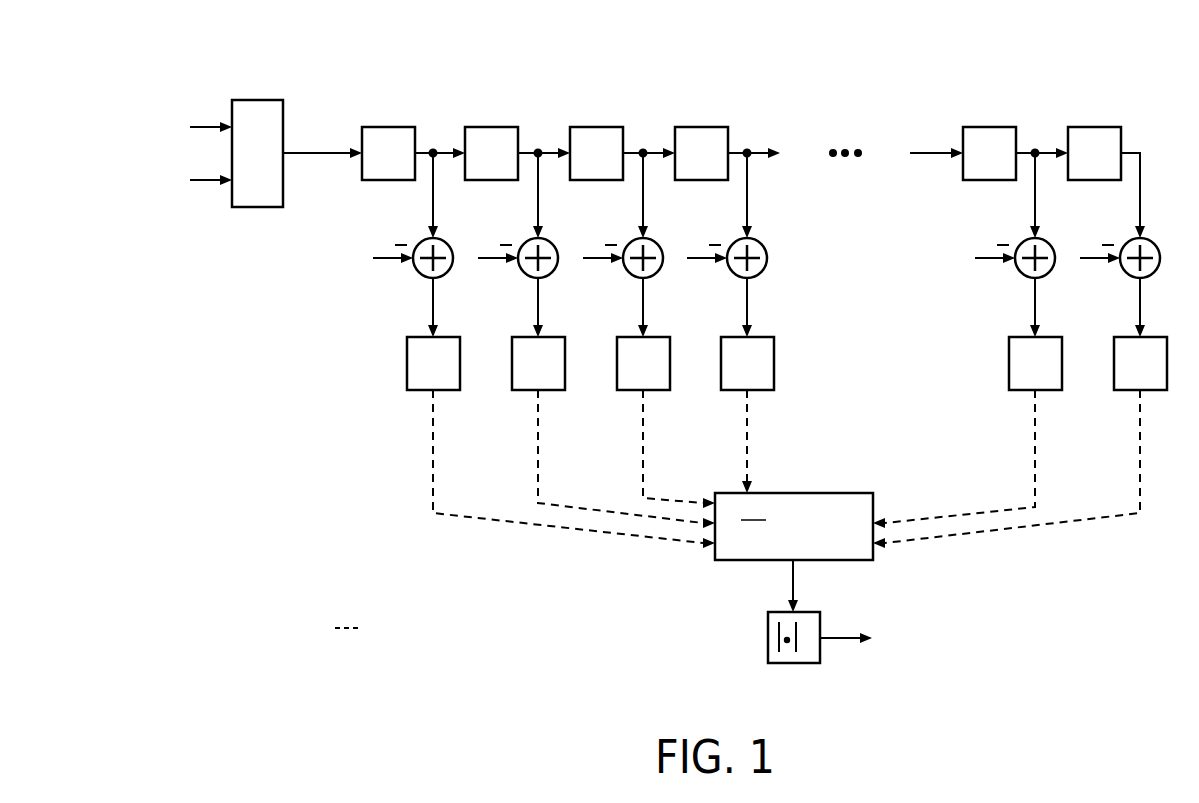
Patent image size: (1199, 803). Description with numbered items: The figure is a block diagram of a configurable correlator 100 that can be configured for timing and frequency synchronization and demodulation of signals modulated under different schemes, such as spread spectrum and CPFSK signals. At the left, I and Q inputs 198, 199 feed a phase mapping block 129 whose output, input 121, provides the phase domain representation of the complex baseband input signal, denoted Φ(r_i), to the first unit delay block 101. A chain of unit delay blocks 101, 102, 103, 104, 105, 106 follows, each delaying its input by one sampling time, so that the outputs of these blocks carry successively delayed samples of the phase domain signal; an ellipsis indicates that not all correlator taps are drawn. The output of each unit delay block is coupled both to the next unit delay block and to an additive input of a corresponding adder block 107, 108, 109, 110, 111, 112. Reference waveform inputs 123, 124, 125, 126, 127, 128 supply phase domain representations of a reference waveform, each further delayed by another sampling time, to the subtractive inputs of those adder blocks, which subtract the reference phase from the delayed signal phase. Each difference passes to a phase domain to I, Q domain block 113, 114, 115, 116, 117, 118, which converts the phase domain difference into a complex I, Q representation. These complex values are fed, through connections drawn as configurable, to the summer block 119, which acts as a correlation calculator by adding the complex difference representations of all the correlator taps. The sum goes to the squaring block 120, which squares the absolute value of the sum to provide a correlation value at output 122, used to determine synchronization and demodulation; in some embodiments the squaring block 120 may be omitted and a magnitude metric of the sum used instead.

The configurable correlator 100 is at (294, 42).
The unit delay block 101 is at (369, 127).
The unit delay block 102 is at (472, 127).
The unit delay block 103 is at (577, 127).
The unit delay block 104 is at (682, 127).
The unit delay block 105 is at (970, 127).
The unit delay block 106 is at (1075, 127).
The adder block 107 is at (446, 243).
The adder block 108 is at (551, 243).
The adder block 109 is at (656, 243).
The adder block 110 is at (760, 243).
The adder block 111 is at (1048, 243).
The adder block 112 is at (1153, 243).
The phase domain to I, Q domain block 113 is at (450, 337).
The phase domain to I, Q domain block 114 is at (555, 337).
The phase domain to I, Q domain block 115 is at (660, 337).
The phase domain to I, Q domain block 116 is at (764, 337).
The phase domain to I, Q domain block 117 is at (1052, 337).
The phase domain to I, Q domain block 118 is at (1157, 337).
The summer block 119 is at (805, 493).
The squaring block 120 is at (768, 638).
The input 121 is at (322, 155).
The output 122 is at (838, 640).
The input 123 is at (381, 256).
The input 124 is at (486, 256).
The input 125 is at (591, 256).
The input 126 is at (695, 256).
The input 127 is at (983, 256).
The input 128 is at (1088, 256).
The phase mapping block 129 is at (257, 207).
The I input 198 is at (204, 126).
The Q input 199 is at (204, 182).